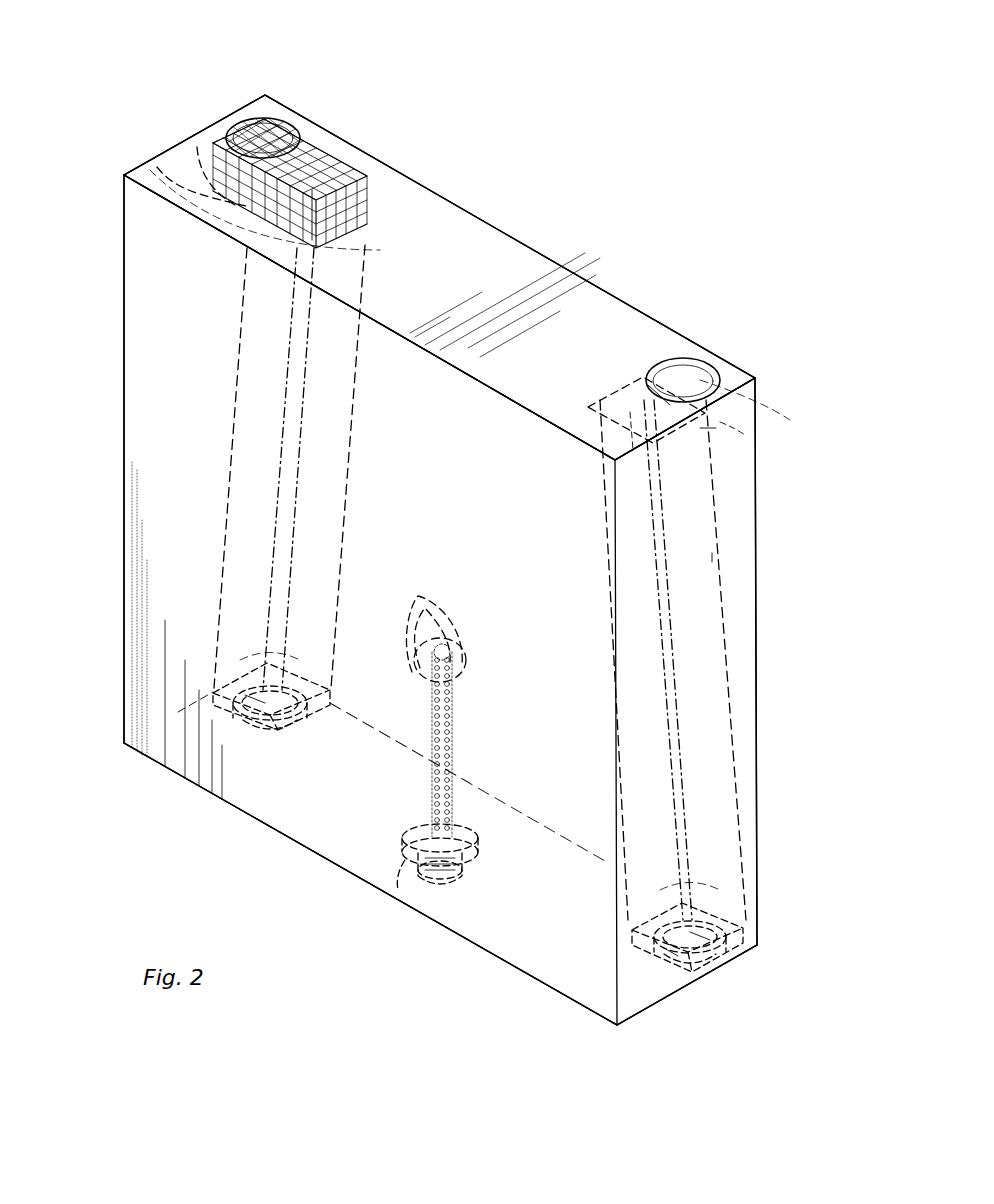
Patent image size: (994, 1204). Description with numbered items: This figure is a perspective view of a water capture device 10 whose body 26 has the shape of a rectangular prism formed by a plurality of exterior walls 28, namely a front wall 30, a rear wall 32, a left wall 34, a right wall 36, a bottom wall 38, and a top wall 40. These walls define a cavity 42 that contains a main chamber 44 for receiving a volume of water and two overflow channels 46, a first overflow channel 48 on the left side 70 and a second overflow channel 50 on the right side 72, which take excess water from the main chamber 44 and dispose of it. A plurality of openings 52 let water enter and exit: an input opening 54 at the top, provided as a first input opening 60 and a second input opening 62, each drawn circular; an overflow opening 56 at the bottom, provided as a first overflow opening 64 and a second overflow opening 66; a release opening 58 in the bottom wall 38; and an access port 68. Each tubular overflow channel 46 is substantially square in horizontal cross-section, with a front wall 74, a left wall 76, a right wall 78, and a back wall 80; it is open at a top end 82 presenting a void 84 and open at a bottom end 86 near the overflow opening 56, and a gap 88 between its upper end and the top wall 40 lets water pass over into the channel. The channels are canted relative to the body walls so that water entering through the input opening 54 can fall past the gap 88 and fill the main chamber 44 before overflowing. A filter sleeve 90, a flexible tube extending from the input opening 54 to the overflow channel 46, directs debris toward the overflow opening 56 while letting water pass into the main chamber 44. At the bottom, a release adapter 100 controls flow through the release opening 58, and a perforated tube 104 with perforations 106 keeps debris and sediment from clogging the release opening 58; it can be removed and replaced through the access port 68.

The water capture device 10 is at (716, 131).
The body 26 is at (610, 293).
The plurality of exterior walls 28 is at (101, 571).
The front wall 30 is at (145, 222).
The rear wall 32 is at (511, 216).
The left wall 34 is at (110, 209).
The right wall 36 is at (745, 630).
The bottom wall 38 is at (540, 998).
The top wall 40 is at (500, 290).
The cavity 42 is at (322, 802).
The main chamber 44 is at (339, 839).
The overflow channel 46 is at (262, 325).
The first overflow channel 48 is at (265, 390).
The second overflow channel 50 is at (695, 562).
The plurality of openings 52 is at (240, 121).
The input opening 54 is at (256, 136).
The overflow opening 56 is at (238, 737).
The release opening 58 is at (440, 896).
The first input opening 60 is at (275, 125).
The second input opening 62 is at (672, 377).
The first overflow opening 64 is at (264, 726).
The second overflow opening 66 is at (672, 952).
The access port 68 is at (410, 862).
The left side 70 is at (92, 160).
The right side 72 is at (801, 428).
The front wall 74 is at (268, 228).
The left wall 76 is at (157, 167).
The right wall 78 is at (352, 243).
The back wall 80 is at (380, 190).
The top end 82 is at (258, 282).
The void 84 is at (313, 186).
The bottom end 86 is at (253, 622).
The gap 88 is at (345, 170).
The filter sleeve 90 is at (207, 163).
The release adapter 100 is at (458, 884).
The perforated tube 104 is at (456, 718).
The perforations 106 is at (425, 625).